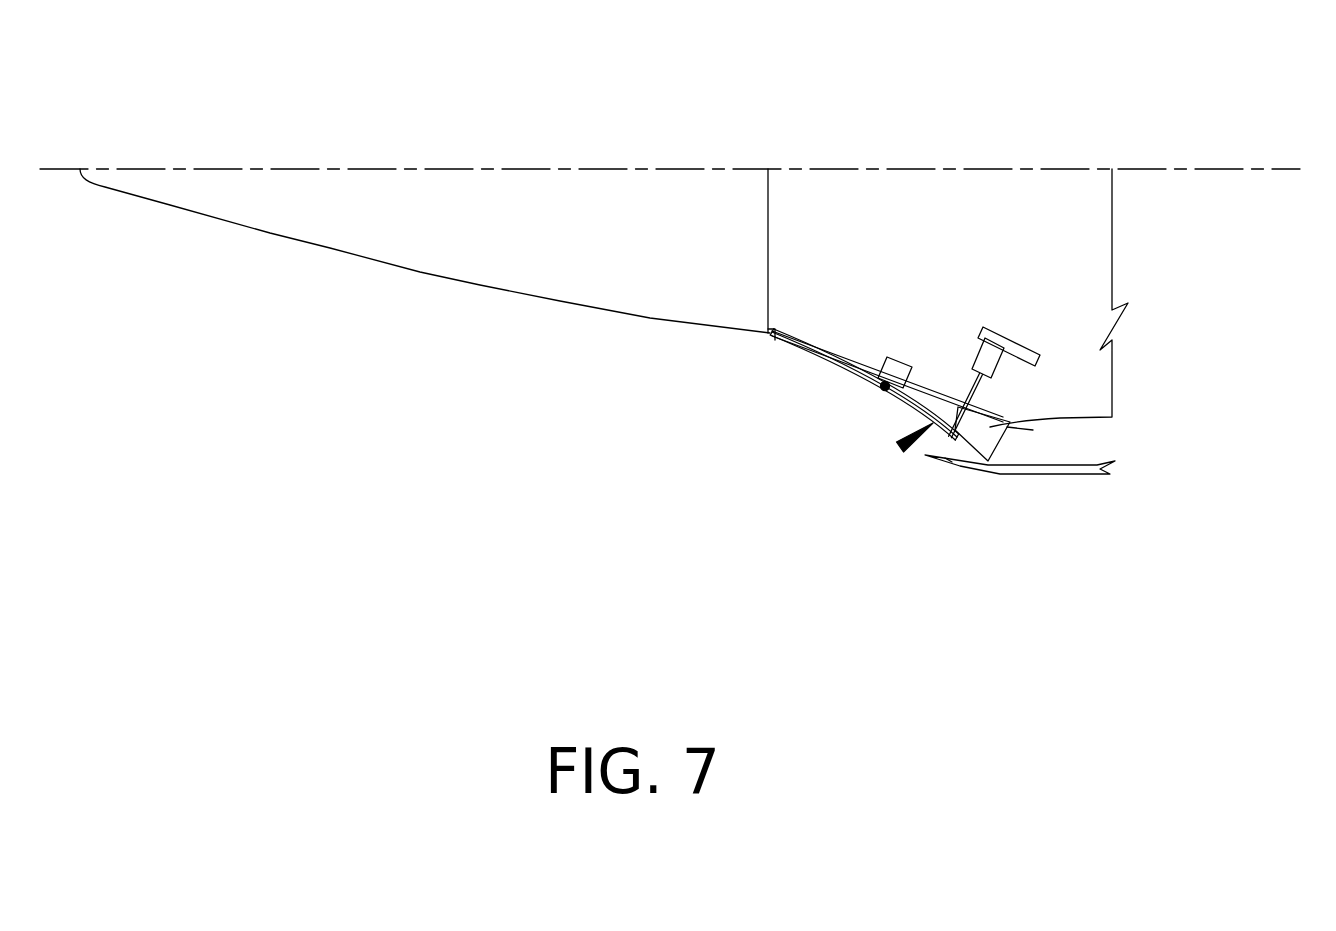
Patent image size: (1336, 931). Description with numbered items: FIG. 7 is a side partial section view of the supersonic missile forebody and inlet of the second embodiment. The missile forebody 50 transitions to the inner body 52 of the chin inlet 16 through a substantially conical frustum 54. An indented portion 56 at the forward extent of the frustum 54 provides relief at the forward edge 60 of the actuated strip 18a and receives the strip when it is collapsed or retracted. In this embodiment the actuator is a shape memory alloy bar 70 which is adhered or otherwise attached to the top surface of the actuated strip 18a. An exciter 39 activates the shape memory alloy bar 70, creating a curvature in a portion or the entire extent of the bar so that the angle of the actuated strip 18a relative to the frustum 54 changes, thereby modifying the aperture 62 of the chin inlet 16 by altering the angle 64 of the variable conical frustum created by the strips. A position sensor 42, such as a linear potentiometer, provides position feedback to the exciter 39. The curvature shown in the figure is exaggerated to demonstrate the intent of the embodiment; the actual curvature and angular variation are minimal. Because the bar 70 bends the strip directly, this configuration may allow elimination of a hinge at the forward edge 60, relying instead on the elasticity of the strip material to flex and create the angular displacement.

The missile forebody 50 is at (483, 290).
The indented portion 56 is at (832, 350).
The forward edge 60 is at (770, 340).
The conical frustum 54 is at (967, 417).
The exciter 39 is at (890, 358).
The shape memory alloy bar 70 is at (880, 392).
The position sensor 42 is at (973, 350).
The aperture 62 is at (990, 458).
The angle 64 is at (1030, 455).
The inner body 52 is at (1060, 403).
The chin inlet 16 is at (950, 458).
The actuated strip 18a is at (900, 447).